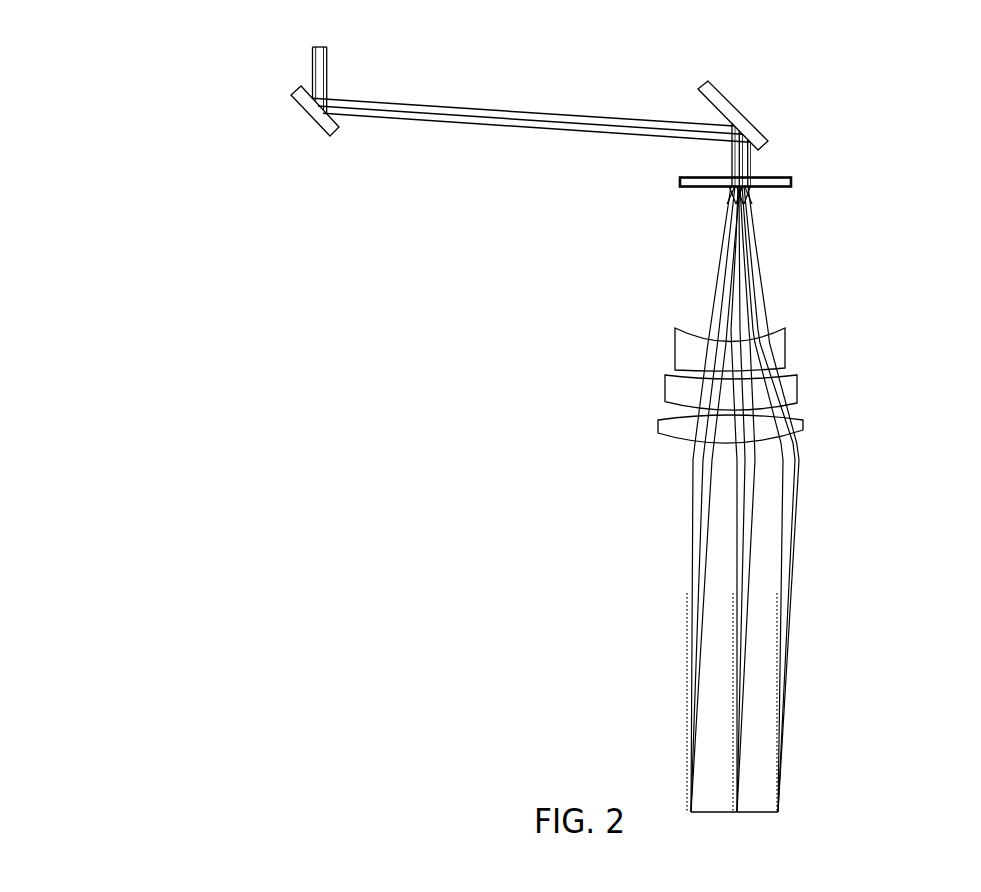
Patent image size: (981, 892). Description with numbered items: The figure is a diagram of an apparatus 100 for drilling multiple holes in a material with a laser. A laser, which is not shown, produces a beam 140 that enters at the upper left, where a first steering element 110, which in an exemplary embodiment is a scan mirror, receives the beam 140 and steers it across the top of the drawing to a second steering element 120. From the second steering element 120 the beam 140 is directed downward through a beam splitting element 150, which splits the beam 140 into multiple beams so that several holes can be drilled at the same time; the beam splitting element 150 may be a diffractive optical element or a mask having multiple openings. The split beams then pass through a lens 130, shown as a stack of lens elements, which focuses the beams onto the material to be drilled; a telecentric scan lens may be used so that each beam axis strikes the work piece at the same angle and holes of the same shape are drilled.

The apparatus 100 is at (107, 102).
The first steering element 110 is at (303, 113).
The second steering element 120 is at (733, 103).
The lens 130 is at (633, 444).
The beam 140 is at (587, 117).
The beam splitting element 150 is at (792, 183).